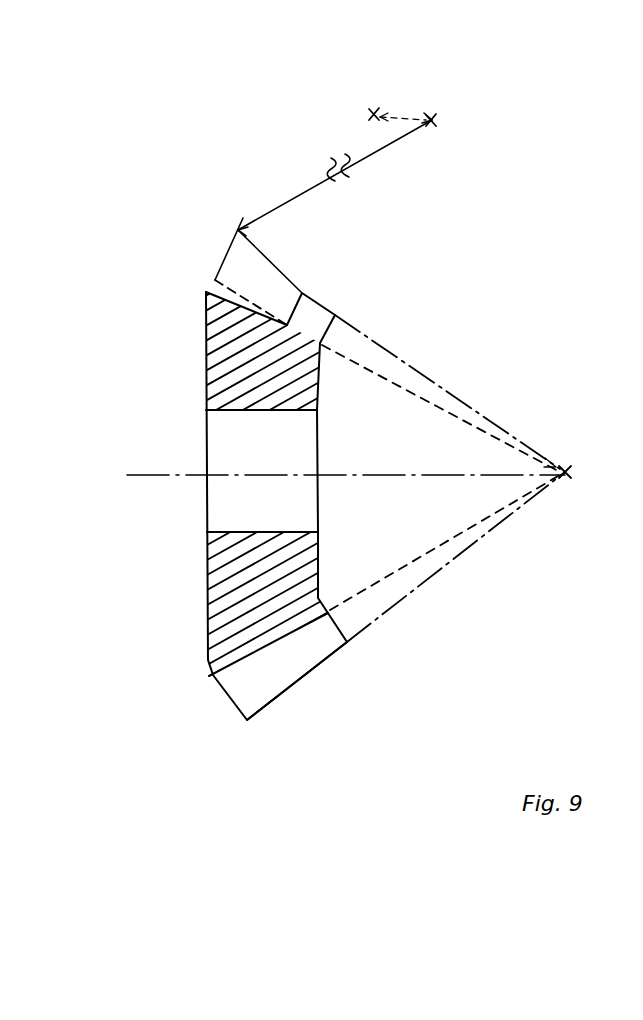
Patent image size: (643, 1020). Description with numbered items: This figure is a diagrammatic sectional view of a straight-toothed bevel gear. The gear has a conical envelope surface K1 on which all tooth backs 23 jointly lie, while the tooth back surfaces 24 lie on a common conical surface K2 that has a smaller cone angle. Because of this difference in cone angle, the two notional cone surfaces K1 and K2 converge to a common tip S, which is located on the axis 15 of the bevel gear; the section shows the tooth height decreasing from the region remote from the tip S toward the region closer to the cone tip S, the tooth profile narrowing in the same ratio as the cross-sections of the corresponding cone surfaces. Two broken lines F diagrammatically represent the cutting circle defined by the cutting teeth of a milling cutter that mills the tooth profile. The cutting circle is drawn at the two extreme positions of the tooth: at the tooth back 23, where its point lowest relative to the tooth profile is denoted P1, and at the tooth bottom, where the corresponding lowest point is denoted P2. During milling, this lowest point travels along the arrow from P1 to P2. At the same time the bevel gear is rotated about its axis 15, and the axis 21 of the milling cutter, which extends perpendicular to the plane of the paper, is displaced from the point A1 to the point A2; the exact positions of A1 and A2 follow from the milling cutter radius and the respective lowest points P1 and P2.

The axis 15 is at (152, 476).
The axis of the milling cutter 21 is at (434, 122).
The tooth back 23 is at (307, 684).
The tooth back surface 24 is at (258, 664).
The point A1 is at (434, 117).
The point A2 is at (373, 110).
The conical envelope surface K1 is at (442, 391).
The common conical surface K2 is at (483, 427).
The common tip S is at (570, 472).
The cutting circle F is at (354, 357).
The lowest point of the cutting circle at the tooth back P1 is at (302, 292).
The lowest point of the cutting circle at the tooth bottom P2 is at (283, 325).